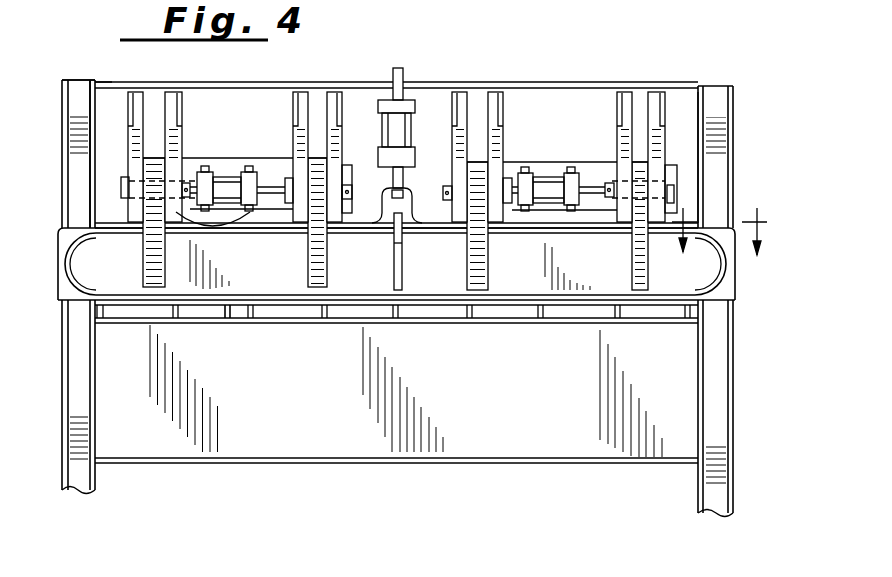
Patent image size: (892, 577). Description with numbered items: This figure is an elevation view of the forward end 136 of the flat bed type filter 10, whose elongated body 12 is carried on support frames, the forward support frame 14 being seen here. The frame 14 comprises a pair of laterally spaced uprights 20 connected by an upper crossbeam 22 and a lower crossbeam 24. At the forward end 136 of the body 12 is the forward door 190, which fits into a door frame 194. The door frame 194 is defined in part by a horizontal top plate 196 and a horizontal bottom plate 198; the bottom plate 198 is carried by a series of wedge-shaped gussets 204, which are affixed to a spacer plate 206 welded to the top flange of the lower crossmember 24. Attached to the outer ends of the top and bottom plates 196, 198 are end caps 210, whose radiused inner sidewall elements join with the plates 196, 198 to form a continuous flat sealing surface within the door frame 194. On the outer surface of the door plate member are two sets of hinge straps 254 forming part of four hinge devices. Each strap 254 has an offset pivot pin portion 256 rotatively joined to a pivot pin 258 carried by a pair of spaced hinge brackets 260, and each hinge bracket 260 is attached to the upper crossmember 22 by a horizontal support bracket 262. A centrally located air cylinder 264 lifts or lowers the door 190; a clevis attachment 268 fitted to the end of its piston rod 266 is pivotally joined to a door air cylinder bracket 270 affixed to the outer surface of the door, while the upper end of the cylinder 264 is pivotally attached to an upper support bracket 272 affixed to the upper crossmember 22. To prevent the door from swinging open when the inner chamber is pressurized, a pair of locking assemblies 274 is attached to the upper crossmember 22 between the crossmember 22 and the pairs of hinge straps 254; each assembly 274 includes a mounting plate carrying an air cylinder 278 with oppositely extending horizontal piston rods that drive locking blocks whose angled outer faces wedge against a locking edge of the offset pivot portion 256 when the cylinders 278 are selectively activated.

The flat bed type filter 10 is at (724, 216).
The elongated body 12 is at (95, 80).
The forward support frame 14 is at (85, 117).
The uprights 20 is at (722, 117).
The upper crossbeam 22 is at (530, 86).
The lower crossbeam 24 is at (522, 418).
The forward end 136 is at (680, 100).
The forward door 190 is at (437, 287).
The door frame 194 is at (733, 296).
The top plate 196 is at (118, 236).
The bottom plate 198 is at (227, 310).
The wedge-shaped gussets 204 is at (322, 312).
The spacer plate 206 is at (160, 322).
The end caps 210 is at (58, 306).
The hinge straps 254 is at (160, 255).
The offset pivot pin portion 256 is at (152, 158).
The pivot pin 258 is at (125, 178).
The hinge brackets 260 is at (173, 97).
The horizontal support bracket 262 is at (183, 110).
The air cylinder 264 is at (415, 125).
The piston rod 266 is at (407, 190).
The clevis attachment 268 is at (388, 190).
The door air cylinder bracket 270 is at (402, 283).
The upper support bracket 272 is at (396, 82).
The locking assemblies 274 is at (172, 221).
The air cylinder 278 is at (227, 184).